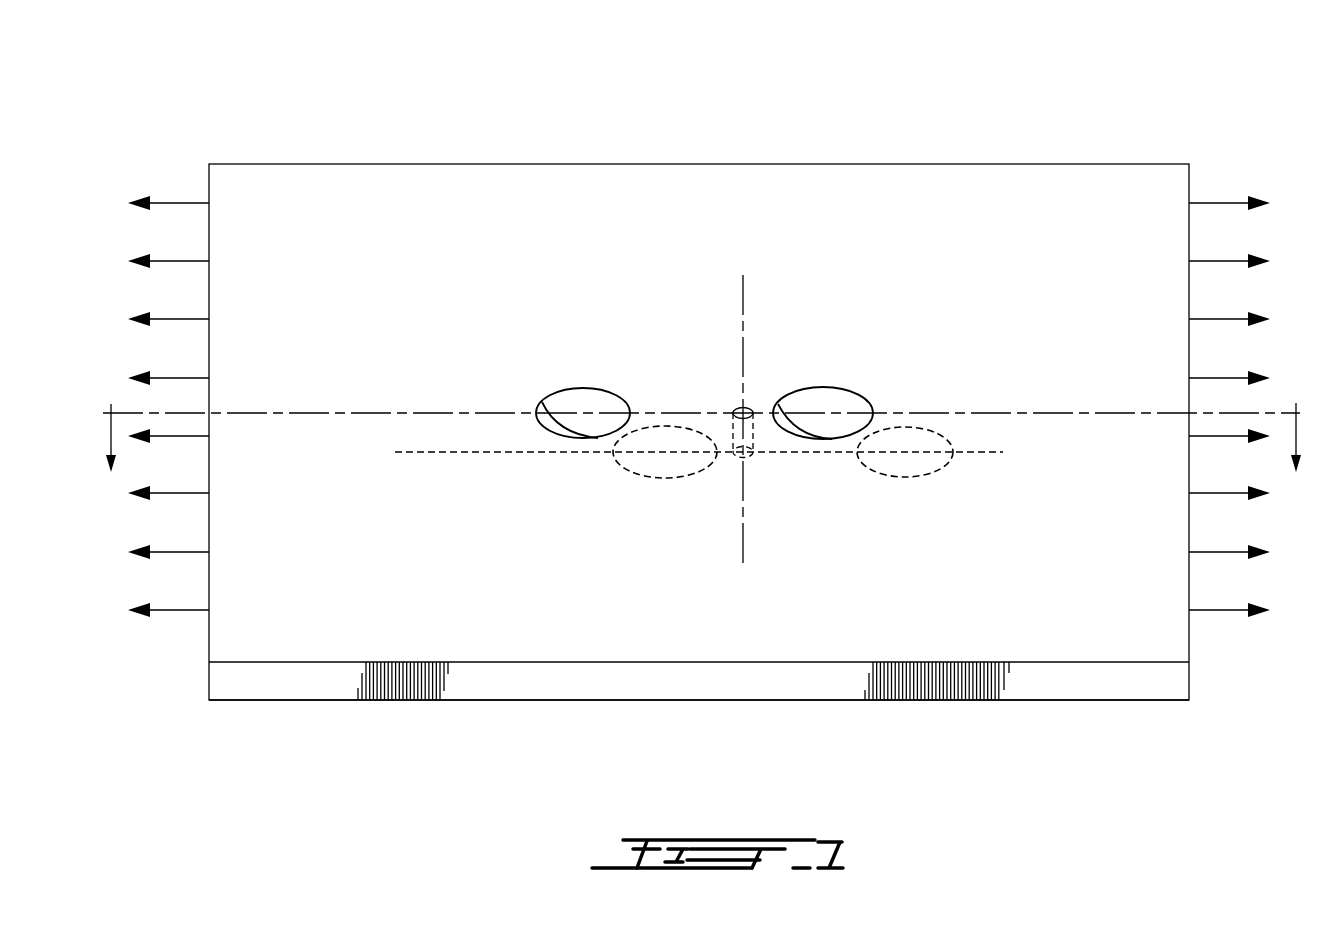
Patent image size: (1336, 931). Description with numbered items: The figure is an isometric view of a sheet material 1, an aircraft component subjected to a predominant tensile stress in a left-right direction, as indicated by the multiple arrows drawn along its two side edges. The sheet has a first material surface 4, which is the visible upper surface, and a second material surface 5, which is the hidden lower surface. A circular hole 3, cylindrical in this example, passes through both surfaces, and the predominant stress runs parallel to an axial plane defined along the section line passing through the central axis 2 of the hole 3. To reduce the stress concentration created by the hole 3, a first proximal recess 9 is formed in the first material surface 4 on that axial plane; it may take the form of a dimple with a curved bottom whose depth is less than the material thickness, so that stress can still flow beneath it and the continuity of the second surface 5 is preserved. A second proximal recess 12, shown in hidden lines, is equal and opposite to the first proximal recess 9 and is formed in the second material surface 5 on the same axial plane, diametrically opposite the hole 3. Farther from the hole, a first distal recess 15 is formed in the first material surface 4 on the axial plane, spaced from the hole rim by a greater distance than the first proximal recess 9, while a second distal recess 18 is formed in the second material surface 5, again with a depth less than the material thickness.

The sheet material 1 is at (955, 152).
The central axis 2 is at (794, 295).
The circular hole 3 is at (749, 409).
The first material surface 4 is at (1130, 623).
The second material surface 5 is at (1105, 700).
The first proximal recess 9 is at (858, 388).
The second proximal recess 12 is at (650, 478).
The first distal recess 15 is at (588, 388).
The second distal recess 18 is at (910, 478).